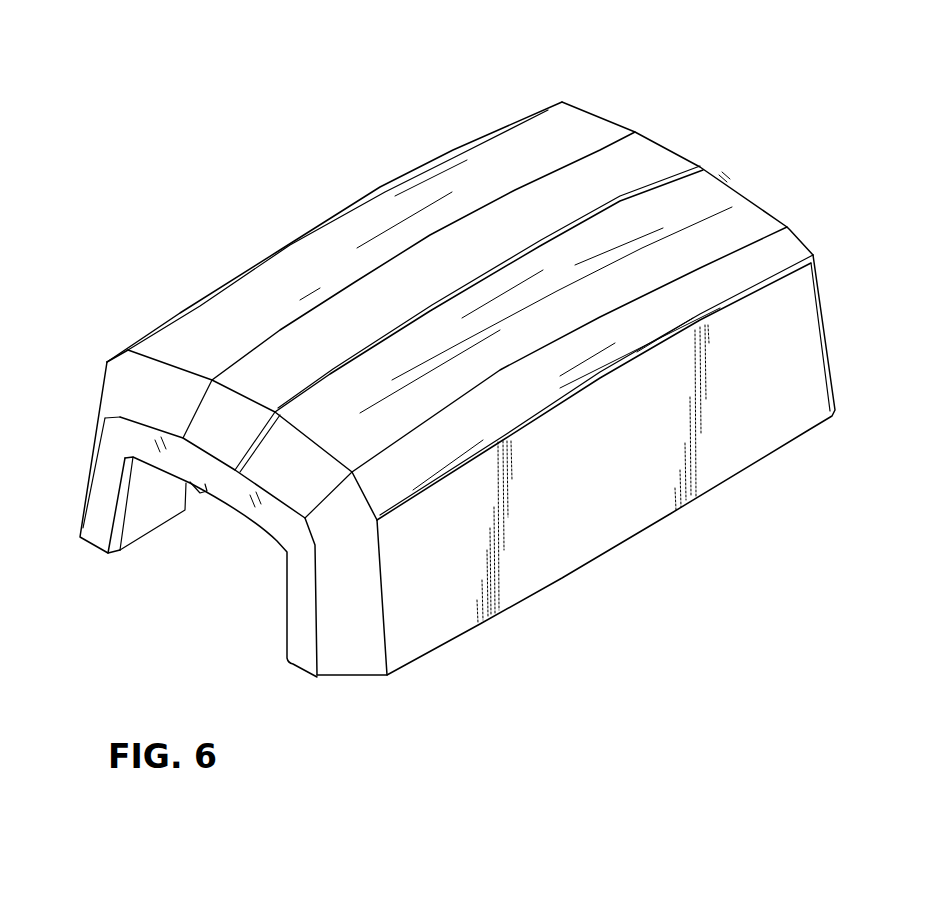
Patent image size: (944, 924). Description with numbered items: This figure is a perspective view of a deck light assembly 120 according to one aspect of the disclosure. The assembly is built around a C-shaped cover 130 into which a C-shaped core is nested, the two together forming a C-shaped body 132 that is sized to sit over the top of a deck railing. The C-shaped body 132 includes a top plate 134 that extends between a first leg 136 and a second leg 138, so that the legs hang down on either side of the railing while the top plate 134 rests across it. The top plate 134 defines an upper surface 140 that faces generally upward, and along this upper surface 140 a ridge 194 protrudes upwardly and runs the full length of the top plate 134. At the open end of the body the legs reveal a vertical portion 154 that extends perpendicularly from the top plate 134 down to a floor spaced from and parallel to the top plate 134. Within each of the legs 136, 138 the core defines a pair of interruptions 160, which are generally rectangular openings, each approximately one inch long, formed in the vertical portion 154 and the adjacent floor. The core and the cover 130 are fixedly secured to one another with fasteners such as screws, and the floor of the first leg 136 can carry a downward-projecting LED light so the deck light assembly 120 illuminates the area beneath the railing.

The deck light assembly 120 is at (447, 83).
The C-shaped cover 130 is at (748, 218).
The C-shaped body 132 is at (525, 113).
The top plate 134 is at (583, 128).
The upper surface 140 is at (583, 128).
The first leg 136 is at (598, 512).
The second leg 138 is at (100, 500).
The vertical portion 154 is at (148, 507).
The interruptions 160 is at (195, 498).
The ridge 194 is at (320, 323).